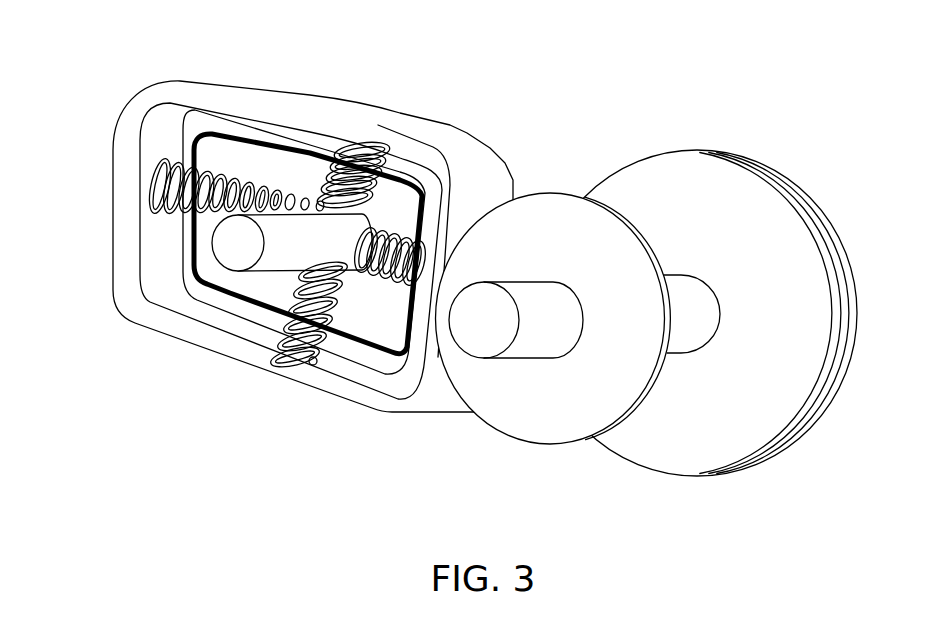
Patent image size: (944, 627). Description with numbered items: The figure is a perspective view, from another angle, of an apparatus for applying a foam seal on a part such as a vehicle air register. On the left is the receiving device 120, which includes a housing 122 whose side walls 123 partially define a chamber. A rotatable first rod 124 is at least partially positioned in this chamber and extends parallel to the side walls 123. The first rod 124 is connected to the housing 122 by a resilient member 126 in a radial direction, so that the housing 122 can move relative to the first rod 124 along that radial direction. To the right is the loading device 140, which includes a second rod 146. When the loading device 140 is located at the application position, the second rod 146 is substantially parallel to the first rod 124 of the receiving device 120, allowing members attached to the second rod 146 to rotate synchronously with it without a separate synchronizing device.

The receiving device 120 is at (243, 57).
The housing 122 is at (112, 195).
The side walls 123 is at (405, 386).
The first rod 124 is at (243, 247).
The resilient member 126 is at (163, 212).
The loading device 140 is at (720, 126).
The second rod 146 is at (696, 300).